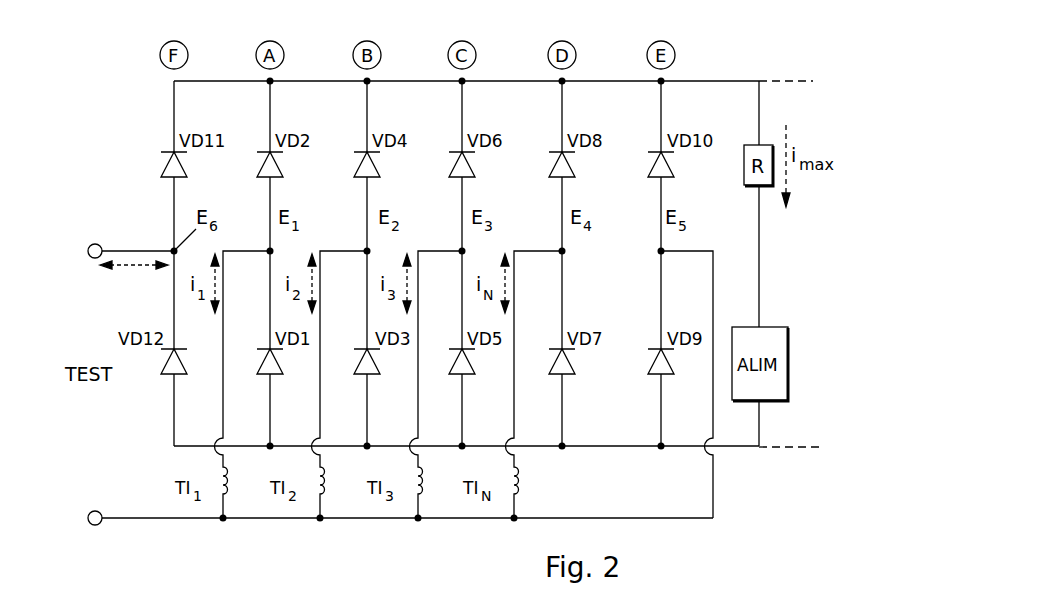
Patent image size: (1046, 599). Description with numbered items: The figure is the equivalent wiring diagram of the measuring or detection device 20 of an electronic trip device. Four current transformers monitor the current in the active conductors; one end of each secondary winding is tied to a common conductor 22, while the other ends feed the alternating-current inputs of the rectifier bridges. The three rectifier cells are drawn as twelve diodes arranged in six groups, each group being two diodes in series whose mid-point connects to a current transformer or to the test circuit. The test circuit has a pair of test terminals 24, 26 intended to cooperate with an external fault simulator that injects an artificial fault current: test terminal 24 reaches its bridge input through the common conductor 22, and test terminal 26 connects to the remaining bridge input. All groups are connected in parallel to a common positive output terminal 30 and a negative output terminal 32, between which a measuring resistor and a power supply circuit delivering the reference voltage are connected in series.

The measuring or detection device 20 is at (356, 70).
The common conductor 22 is at (410, 520).
The test terminal 24 is at (90, 511).
The test terminal 26 is at (91, 245).
The positive output terminal 30 is at (762, 80).
The negative output terminal 32 is at (760, 448).